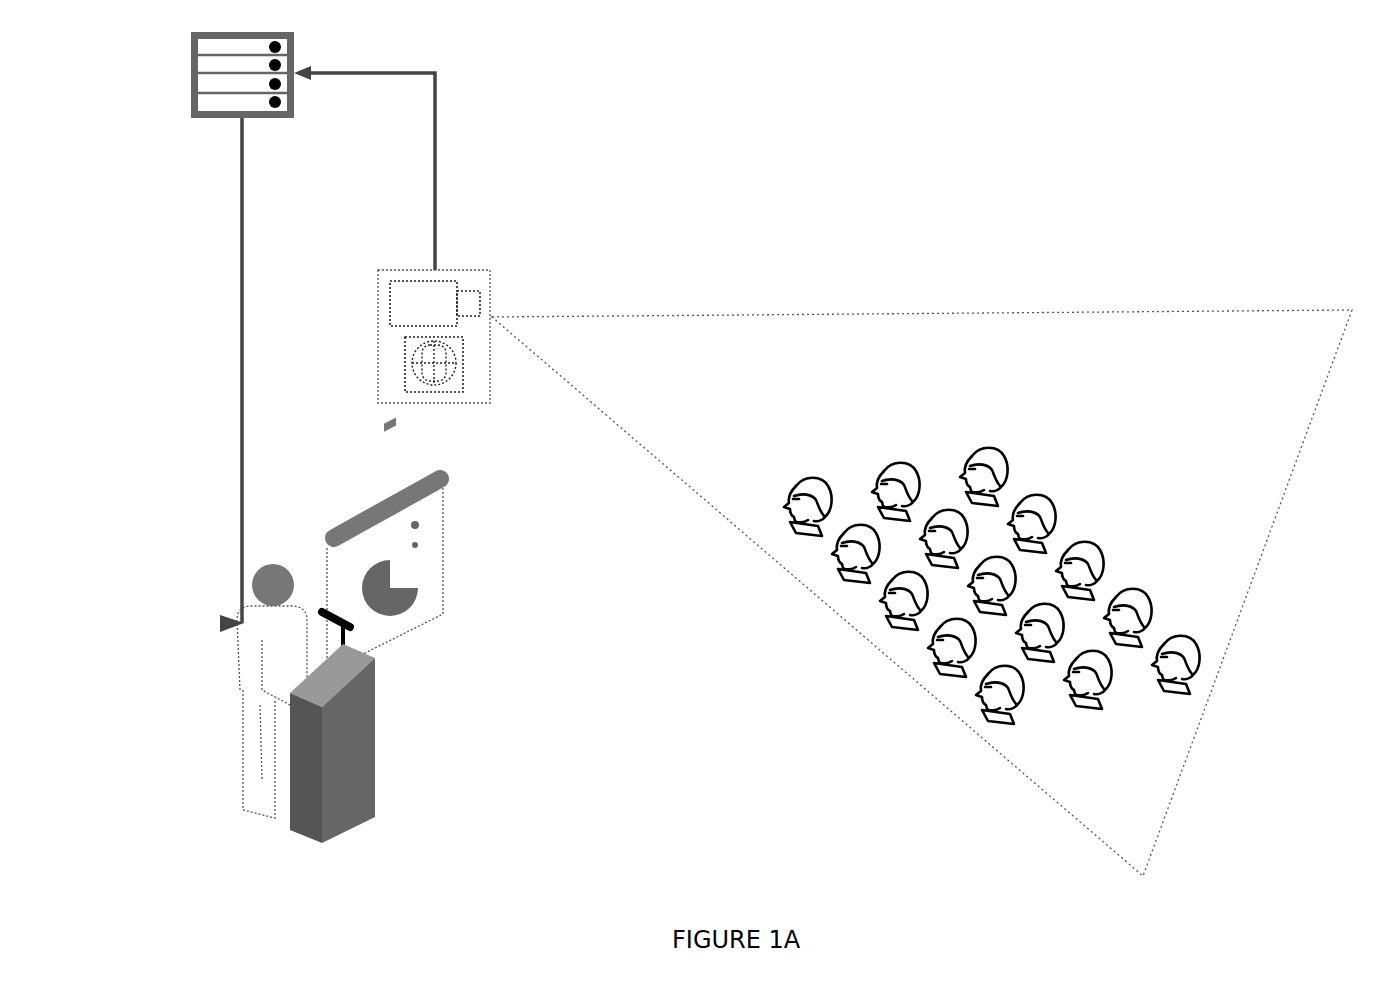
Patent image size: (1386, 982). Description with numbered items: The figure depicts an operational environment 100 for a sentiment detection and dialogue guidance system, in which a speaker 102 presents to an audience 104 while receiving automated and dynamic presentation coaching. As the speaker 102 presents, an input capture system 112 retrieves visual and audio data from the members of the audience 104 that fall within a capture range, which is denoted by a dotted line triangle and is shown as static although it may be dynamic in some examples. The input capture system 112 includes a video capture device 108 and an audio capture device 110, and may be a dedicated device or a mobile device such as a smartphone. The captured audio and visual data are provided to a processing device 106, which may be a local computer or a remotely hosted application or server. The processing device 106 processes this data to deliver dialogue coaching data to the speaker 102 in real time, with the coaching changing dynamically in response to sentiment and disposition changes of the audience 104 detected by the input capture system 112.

The operational environment 100 is at (1238, 172).
The speaker 102 is at (233, 640).
The audience 104 is at (1172, 771).
The processing device 106 is at (192, 107).
The video capture device 108 is at (480, 298).
The audio capture device 110 is at (402, 378).
The input capture system 112 is at (378, 312).